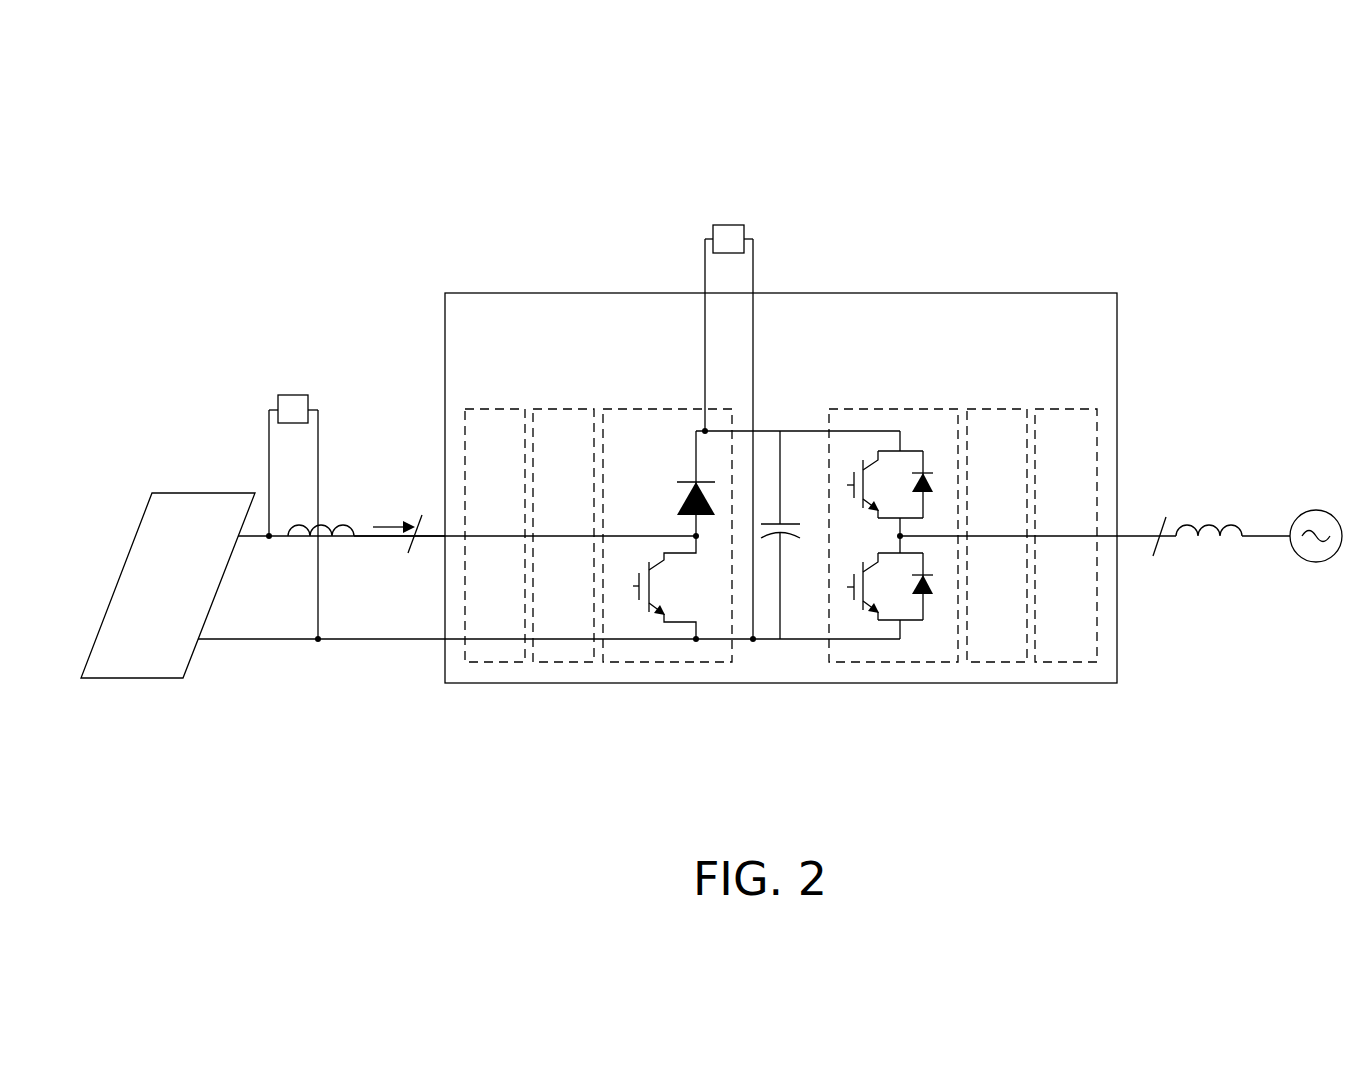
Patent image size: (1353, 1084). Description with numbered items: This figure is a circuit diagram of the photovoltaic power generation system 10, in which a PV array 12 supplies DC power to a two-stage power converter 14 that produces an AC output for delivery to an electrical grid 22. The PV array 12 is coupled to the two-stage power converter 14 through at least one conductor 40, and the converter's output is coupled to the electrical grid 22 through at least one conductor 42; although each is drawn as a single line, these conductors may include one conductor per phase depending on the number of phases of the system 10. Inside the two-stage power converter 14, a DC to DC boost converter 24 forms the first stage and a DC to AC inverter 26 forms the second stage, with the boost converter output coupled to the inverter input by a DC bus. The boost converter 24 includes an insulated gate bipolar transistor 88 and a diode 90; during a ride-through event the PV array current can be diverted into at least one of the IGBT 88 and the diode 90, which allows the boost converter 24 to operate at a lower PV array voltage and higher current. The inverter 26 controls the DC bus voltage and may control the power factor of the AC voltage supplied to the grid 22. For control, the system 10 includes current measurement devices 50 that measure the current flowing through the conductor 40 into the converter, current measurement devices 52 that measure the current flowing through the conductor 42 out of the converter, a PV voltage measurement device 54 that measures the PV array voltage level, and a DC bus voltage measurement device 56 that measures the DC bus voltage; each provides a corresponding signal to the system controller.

The photovoltaic power generation system 10 is at (1136, 211).
The PV array 12 is at (132, 679).
The two-stage power converter 14 is at (1117, 320).
The electrical grid 22 is at (1265, 604).
The DC to DC boost converter 24 is at (677, 370).
The DC to AC inverter 26 is at (869, 370).
The conductor 40 is at (438, 537).
The conductor 42 is at (1136, 534).
The current measurement device 50 is at (398, 512).
The current measurement device 52 is at (1174, 494).
The PV voltage measurement device 54 is at (292, 395).
The DC bus voltage measurement device 56 is at (725, 225).
The insulated gate bipolar transistor 88 is at (662, 615).
The diode 90 is at (678, 508).